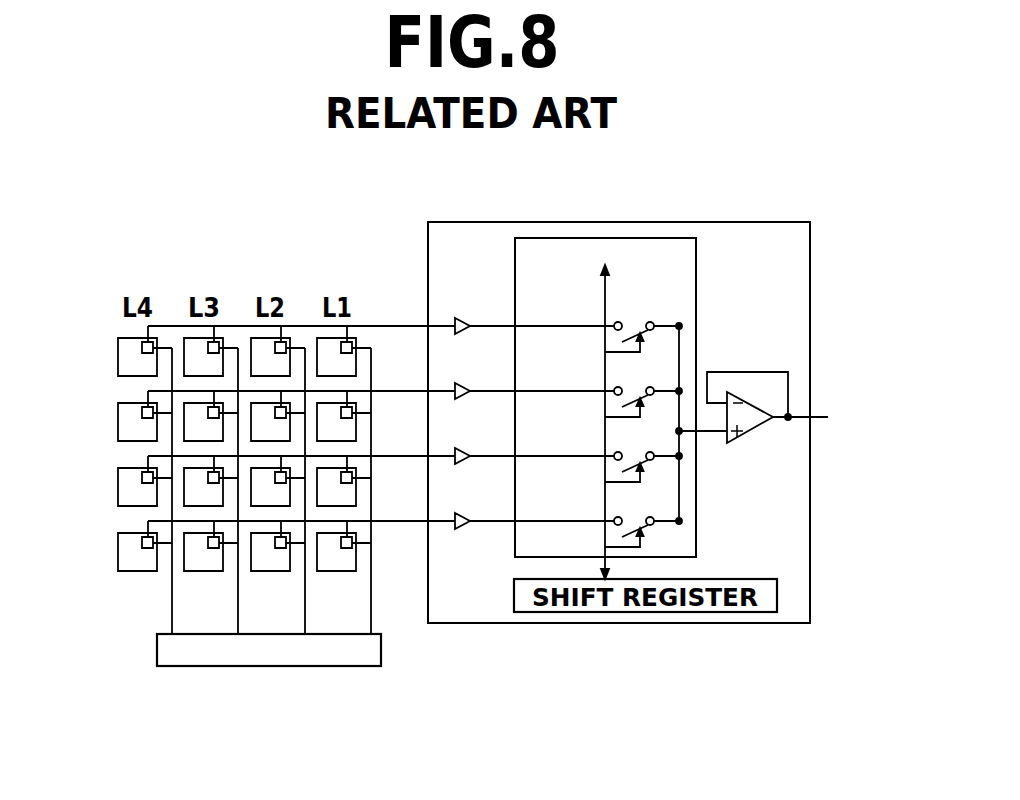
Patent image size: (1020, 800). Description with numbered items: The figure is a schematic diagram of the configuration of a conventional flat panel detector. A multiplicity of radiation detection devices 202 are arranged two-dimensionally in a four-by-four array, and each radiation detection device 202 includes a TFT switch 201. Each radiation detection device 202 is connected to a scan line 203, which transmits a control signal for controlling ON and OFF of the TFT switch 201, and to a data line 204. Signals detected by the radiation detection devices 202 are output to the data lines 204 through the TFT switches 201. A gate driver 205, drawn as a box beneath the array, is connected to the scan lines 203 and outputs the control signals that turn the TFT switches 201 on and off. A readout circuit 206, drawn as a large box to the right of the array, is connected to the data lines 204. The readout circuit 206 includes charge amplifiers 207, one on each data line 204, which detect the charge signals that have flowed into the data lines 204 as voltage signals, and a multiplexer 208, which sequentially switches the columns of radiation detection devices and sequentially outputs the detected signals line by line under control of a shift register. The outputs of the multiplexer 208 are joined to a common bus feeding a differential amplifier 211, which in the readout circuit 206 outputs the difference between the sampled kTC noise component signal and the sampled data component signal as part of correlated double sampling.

The TFT switch 201 is at (140, 540).
The radiation detection device 202 is at (137, 556).
The scan line 203 is at (172, 612).
The data line 204 is at (242, 325).
The gate driver 205 is at (268, 666).
The readout circuit 206 is at (810, 232).
The charge amplifier 207 is at (465, 525).
The multiplexer 208 is at (696, 248).
The differential amplifier 211 is at (753, 432).